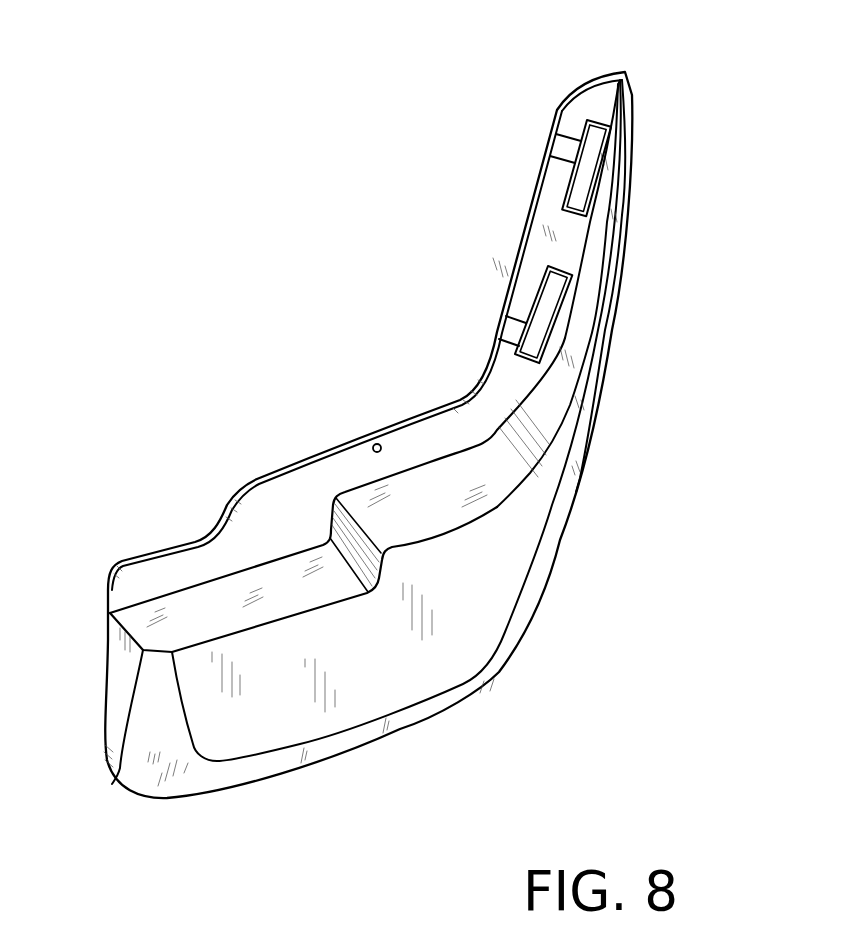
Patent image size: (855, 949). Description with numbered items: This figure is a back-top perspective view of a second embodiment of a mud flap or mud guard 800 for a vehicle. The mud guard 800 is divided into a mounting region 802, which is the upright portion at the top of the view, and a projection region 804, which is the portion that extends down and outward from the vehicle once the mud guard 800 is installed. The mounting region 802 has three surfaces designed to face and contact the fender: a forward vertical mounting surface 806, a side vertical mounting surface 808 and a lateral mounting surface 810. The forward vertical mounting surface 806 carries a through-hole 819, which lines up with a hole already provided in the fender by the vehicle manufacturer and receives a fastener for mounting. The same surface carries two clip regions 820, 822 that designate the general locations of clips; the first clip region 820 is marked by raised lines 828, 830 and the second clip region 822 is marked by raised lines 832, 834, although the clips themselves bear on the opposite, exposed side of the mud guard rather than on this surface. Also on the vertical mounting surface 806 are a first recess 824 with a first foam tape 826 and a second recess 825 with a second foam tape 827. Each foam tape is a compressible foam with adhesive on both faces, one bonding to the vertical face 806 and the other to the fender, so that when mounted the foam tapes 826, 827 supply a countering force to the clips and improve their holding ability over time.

The mud guard 800 is at (226, 224).
The mounting region 802 is at (528, 218).
The projection region 804 is at (500, 669).
The forward vertical mounting surface 806 is at (607, 100).
The side vertical mounting surface 808 is at (573, 333).
The lateral mounting surface 810 is at (493, 452).
The through-hole 819 is at (373, 446).
The clip region 820 is at (512, 335).
The clip region 822 is at (560, 145).
The first recess 824 is at (615, 130).
The second recess 825 is at (607, 282).
The first foam tape 826 is at (590, 185).
The second foam tape 827 is at (593, 314).
The raised line 828 is at (510, 346).
The raised line 830 is at (514, 319).
The raised line 832 is at (555, 157).
The raised line 834 is at (563, 130).